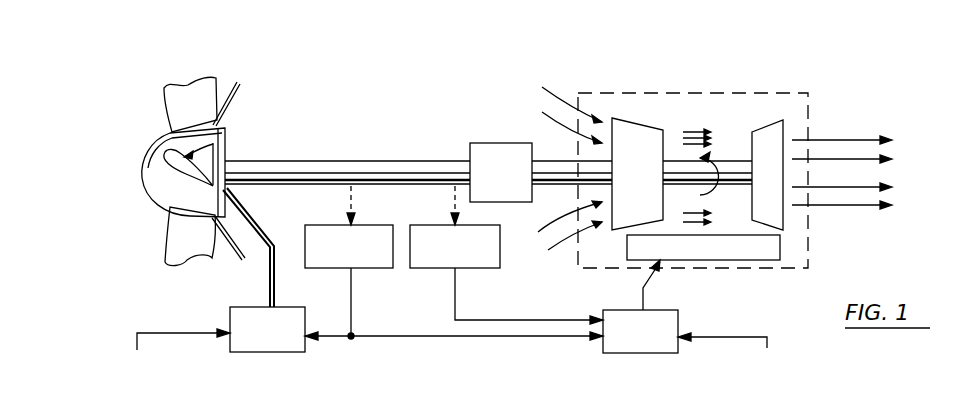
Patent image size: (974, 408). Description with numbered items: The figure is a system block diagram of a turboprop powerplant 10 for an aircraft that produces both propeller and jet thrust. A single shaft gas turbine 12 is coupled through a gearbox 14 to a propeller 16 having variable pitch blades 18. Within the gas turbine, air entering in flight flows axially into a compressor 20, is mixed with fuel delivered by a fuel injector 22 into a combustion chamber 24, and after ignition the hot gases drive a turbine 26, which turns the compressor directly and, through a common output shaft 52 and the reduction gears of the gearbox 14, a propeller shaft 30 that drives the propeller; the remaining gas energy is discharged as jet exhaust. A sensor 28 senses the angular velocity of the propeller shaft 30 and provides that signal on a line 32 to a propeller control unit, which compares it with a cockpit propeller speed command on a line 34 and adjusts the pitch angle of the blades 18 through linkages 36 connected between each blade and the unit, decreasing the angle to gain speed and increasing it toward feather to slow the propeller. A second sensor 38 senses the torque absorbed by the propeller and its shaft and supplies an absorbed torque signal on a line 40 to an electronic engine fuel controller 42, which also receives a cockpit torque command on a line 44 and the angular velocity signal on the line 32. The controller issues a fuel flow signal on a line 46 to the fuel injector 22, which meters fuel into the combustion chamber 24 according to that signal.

The turboprop powerplant 10 is at (128, 97).
The single shaft gas turbine 12 is at (725, 82).
The gearbox 14 is at (508, 143).
The propeller 16 is at (151, 152).
The variable pitch blades 18 is at (200, 90).
The compressor 20 is at (642, 122).
The fuel injector 22 is at (780, 248).
The combustion chamber 24 is at (698, 215).
The turbine 26 is at (758, 128).
The sensor 28 is at (364, 226).
The propeller shaft 30 is at (379, 161).
The line 32 is at (355, 308).
The line 34 is at (171, 334).
The linkages 36 is at (232, 106).
The sensor 38 is at (486, 270).
The line 40 is at (522, 318).
The electronic engine fuel controller 42 is at (683, 323).
The line 44 is at (745, 337).
The line 46 is at (655, 287).
The common output shaft 52 is at (555, 175).